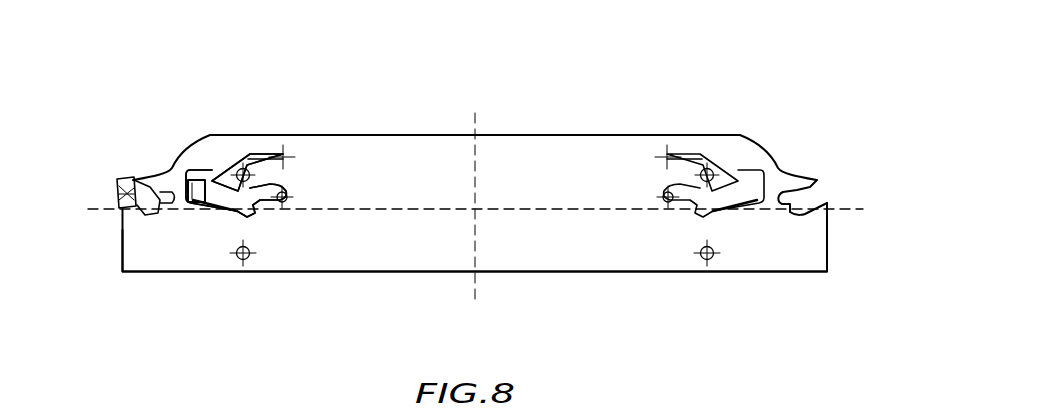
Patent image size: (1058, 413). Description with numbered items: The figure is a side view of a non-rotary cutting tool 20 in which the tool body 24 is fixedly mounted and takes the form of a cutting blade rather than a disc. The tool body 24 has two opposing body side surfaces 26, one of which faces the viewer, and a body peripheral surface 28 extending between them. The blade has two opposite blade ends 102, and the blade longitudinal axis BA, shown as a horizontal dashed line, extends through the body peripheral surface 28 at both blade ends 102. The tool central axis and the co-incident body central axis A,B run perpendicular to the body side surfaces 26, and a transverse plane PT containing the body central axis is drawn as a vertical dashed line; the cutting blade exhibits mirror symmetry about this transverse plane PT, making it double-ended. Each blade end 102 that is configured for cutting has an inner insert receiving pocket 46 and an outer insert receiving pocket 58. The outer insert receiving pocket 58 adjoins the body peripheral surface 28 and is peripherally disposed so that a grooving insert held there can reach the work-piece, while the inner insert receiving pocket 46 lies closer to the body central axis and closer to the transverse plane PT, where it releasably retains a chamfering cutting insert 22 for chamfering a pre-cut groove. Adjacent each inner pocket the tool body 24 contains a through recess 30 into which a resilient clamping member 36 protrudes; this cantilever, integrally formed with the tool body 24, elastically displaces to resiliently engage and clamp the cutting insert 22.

The cutting tool 20 is at (477, 184).
The tool body 24 is at (472, 197).
The body side surfaces 26 is at (444, 152).
The body peripheral surface 28 is at (470, 269).
The through recess 30 is at (198, 220).
The cutting insert 22 is at (227, 205).
The resilient clamping member 36 is at (263, 173).
The inner insert receiving pocket 46 is at (209, 189).
The outer insert receiving pocket 58 is at (148, 191).
The blade ends 102 is at (122, 252).
The transverse plane PT is at (476, 120).
The blade longitudinal axis BA is at (852, 208).
The tool central axis and body central axis A,B is at (475, 208).